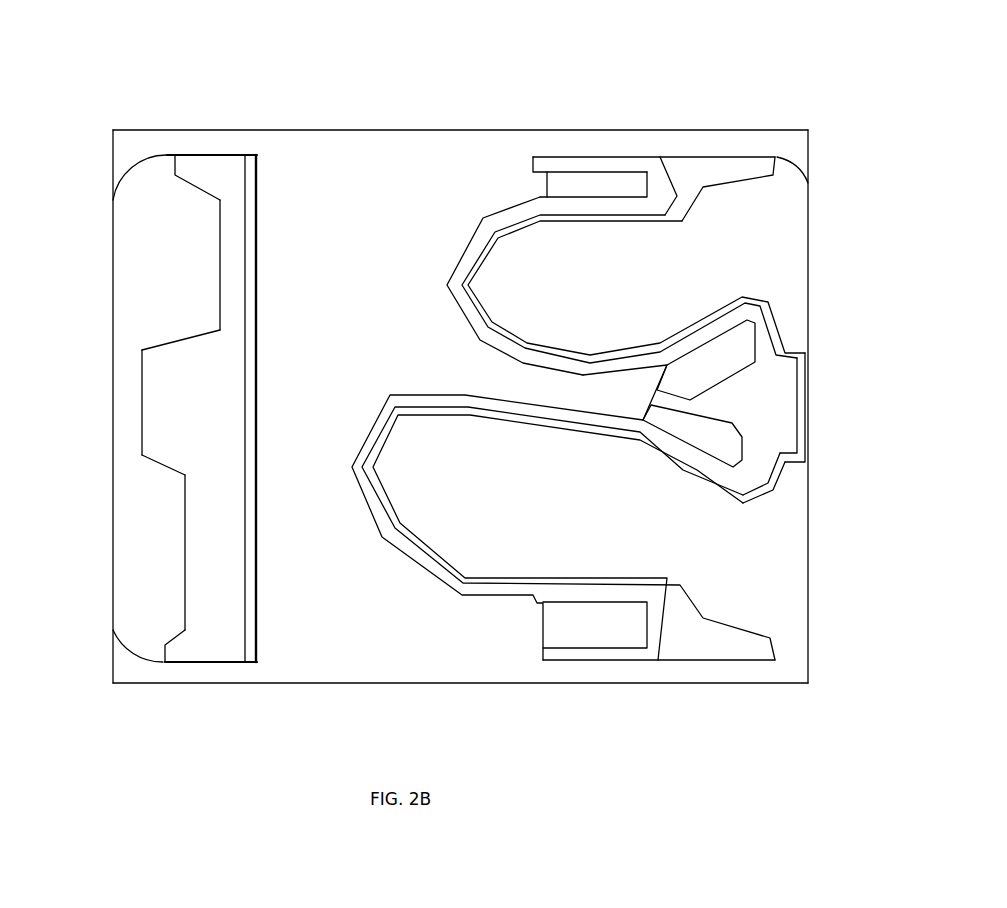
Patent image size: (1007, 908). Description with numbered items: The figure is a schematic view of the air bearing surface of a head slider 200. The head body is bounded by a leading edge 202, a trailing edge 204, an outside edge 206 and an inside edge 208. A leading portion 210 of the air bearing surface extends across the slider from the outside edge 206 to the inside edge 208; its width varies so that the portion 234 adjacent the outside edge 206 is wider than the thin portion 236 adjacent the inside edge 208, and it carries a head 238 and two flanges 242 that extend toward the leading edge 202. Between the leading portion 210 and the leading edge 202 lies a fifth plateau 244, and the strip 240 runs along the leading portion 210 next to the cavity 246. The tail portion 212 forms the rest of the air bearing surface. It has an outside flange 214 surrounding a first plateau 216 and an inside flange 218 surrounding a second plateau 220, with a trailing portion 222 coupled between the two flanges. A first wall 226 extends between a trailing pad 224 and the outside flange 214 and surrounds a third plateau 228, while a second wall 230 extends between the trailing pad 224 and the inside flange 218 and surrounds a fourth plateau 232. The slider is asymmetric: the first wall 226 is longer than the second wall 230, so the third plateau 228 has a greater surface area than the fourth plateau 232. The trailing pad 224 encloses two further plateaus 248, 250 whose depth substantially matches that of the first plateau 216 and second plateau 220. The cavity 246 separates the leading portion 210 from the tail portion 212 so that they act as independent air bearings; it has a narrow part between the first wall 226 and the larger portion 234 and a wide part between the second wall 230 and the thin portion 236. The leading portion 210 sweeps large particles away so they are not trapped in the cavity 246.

The head slider 200 is at (150, 98).
The leading edge 202 is at (113, 372).
The trailing edge 204 is at (808, 297).
The outside edge 206 is at (553, 683).
The inside edge 208 is at (451, 130).
The leading portion 210 is at (146, 403).
The tail portion 212 is at (800, 397).
The outside flange 214 is at (652, 642).
The first plateau 216 is at (595, 625).
The inside flange 218 is at (588, 160).
The second plateau 220 is at (593, 184).
The trailing portion 222 is at (765, 411).
The trailing pad 224 is at (745, 297).
The first wall 226 is at (377, 505).
The third plateau 228 is at (563, 527).
The second wall 230 is at (465, 287).
The fourth plateau 232 is at (626, 286).
The larger width portion 234 is at (185, 555).
The thin portion 236 is at (220, 253).
The head 238 is at (142, 420).
The ground plane strip 240 is at (205, 665).
The flange 242 is at (212, 172).
The fifth plateau 244 is at (142, 190).
The cavity 246 is at (340, 346).
The plateau 248 is at (692, 436).
The plateau 250 is at (706, 360).